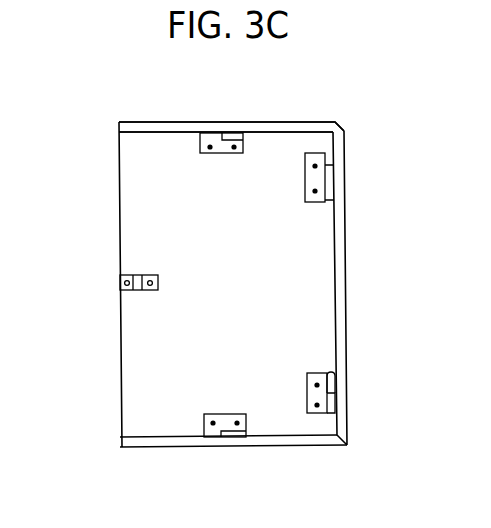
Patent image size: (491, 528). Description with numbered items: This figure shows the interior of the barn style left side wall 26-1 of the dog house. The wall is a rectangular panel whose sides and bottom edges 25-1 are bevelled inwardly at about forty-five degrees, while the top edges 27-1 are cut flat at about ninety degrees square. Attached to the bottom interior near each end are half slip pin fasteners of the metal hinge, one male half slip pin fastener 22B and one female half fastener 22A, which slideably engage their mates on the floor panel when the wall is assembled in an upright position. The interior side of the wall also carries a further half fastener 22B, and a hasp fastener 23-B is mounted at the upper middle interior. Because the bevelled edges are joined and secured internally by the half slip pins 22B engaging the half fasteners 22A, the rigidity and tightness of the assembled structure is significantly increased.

The sides and bottom edges 25-1 is at (185, 123).
The left side wall 26-1 is at (330, 119).
The top edges 27-1 is at (127, 333).
The female half slip pin fastener 22A is at (328, 180).
The male half slip pin fastener 22B is at (237, 134).
The hasp fastener 23-B is at (120, 290).